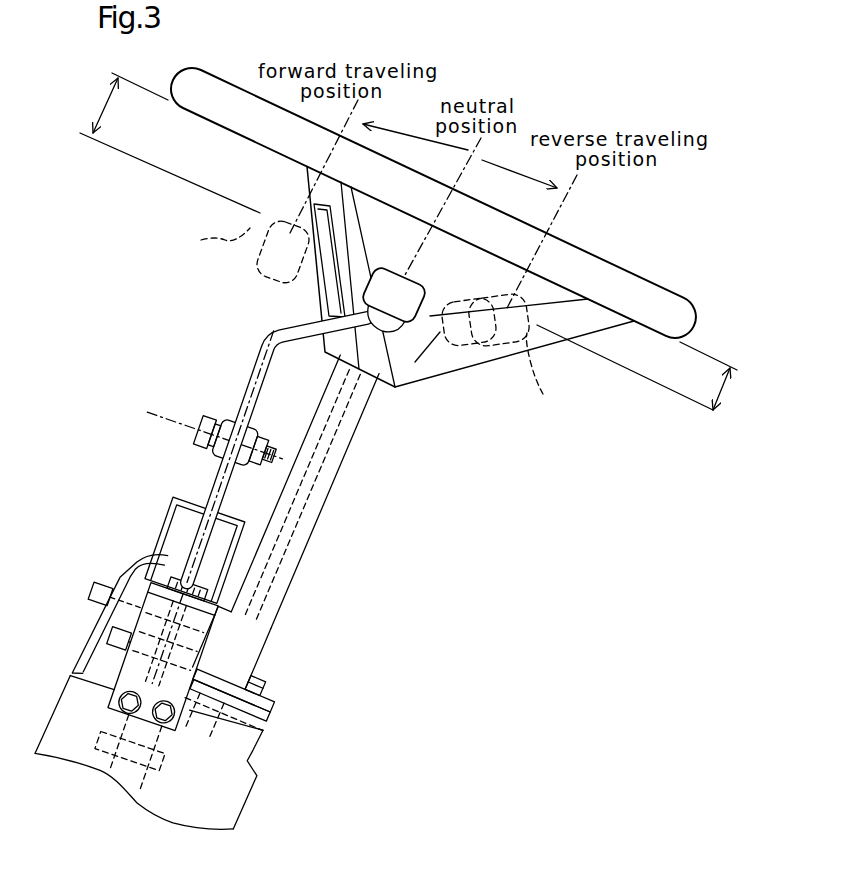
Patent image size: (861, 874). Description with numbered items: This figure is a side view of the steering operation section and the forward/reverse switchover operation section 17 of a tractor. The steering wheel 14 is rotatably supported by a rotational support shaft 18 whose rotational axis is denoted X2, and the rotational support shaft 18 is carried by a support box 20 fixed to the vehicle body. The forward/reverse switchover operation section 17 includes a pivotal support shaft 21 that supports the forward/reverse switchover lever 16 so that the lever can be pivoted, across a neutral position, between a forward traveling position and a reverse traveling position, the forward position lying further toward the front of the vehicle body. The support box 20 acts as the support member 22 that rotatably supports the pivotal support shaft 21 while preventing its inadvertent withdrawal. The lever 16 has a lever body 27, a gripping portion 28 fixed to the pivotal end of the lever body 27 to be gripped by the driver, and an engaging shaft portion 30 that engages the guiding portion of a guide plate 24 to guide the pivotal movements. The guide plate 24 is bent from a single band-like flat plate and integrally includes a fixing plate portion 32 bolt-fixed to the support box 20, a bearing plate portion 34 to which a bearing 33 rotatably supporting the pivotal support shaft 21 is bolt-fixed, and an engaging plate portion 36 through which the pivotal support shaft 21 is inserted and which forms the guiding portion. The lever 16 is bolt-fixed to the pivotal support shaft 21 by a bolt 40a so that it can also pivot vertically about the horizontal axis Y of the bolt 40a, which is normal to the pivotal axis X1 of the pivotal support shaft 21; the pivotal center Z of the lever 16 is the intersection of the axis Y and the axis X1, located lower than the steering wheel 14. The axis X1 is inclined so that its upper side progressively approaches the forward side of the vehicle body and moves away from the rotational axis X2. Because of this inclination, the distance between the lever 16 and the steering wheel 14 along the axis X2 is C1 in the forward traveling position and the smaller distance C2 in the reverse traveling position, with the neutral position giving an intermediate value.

The steering wheel 14 is at (596, 256).
The forward/reverse switchover lever 16 is at (271, 322).
The forward/reverse switchover operation section 17 is at (222, 388).
The rotational support shaft 18 is at (353, 447).
The support box 20 is at (238, 797).
The support member 22 is at (202, 753).
The pivotal support shaft 21 is at (212, 492).
The guide plate 24 is at (214, 623).
The lever body 27 is at (302, 334).
The gripping portion 28 is at (458, 271).
The engaging shaft portion 30 is at (233, 480).
The fixing plate portion 32 is at (130, 680).
The bearing 33 is at (178, 574).
The bearing plate portion 34 is at (205, 578).
The engaging plate portion 36 is at (236, 510).
The bolt 40a is at (210, 430).
The pivotal axis X1 is at (245, 372).
The rotational axis of the steering wheel X2 is at (362, 424).
The horizontal axis Y is at (204, 429).
The pivotal center Z is at (210, 456).
The distance c1 C1 is at (146, 143).
The distance c2 C2 is at (664, 367).